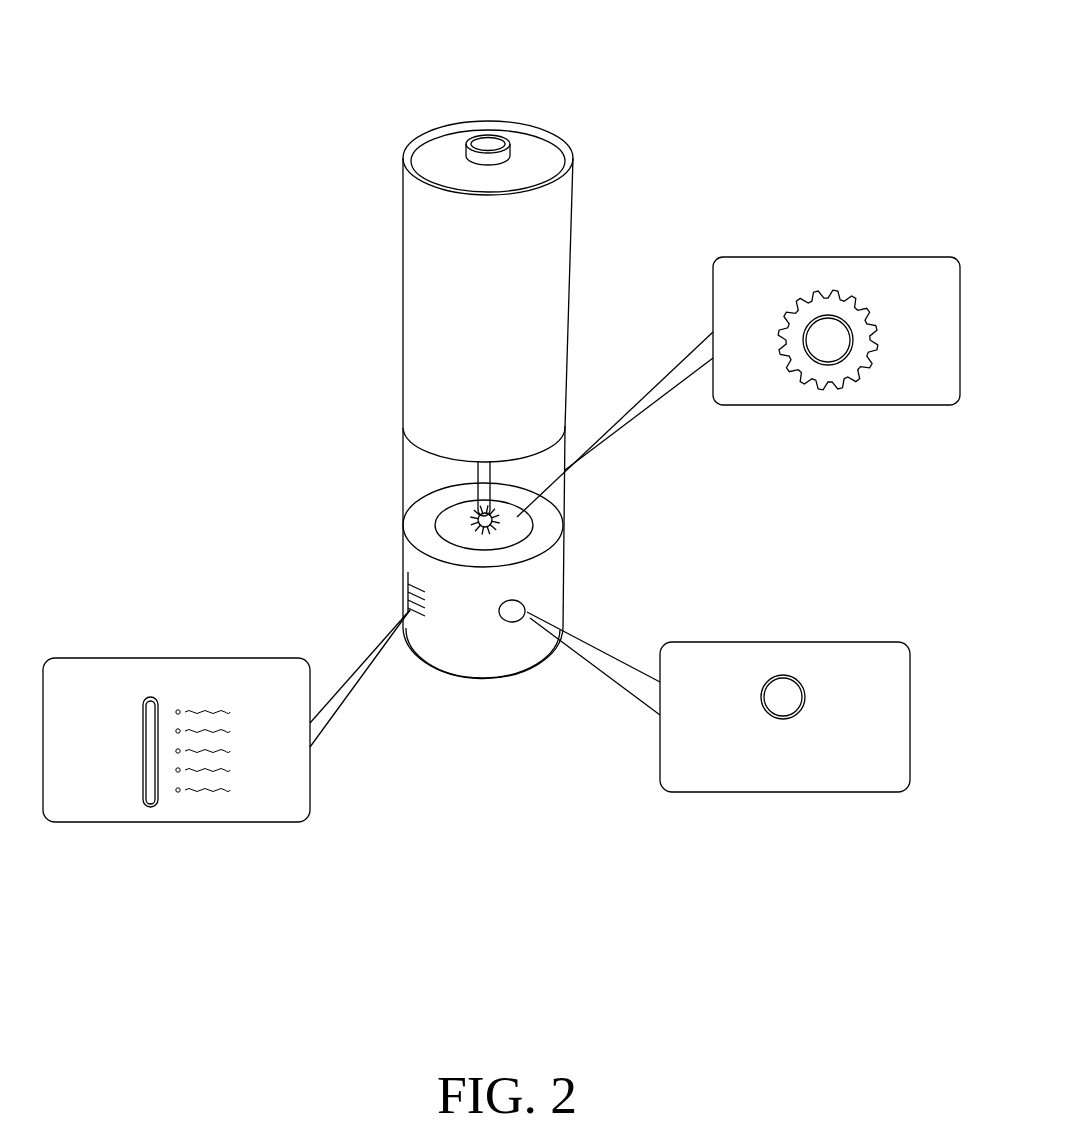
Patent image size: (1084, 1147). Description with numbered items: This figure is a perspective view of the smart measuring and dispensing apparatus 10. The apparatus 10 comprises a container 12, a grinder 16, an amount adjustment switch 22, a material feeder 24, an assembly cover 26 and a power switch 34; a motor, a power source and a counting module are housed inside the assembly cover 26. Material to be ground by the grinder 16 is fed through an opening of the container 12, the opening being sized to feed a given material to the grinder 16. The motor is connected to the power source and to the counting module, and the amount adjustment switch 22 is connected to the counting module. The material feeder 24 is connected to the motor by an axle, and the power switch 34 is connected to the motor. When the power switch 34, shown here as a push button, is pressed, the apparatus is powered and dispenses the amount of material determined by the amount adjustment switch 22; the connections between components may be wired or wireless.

The apparatus 10 is at (244, 29).
The container 12 is at (405, 483).
The grinder 16 is at (857, 357).
The amount adjustment switch 22 is at (150, 717).
The material feeder 24 is at (477, 518).
The assembly cover 26 is at (550, 230).
The power switch 34 is at (783, 707).